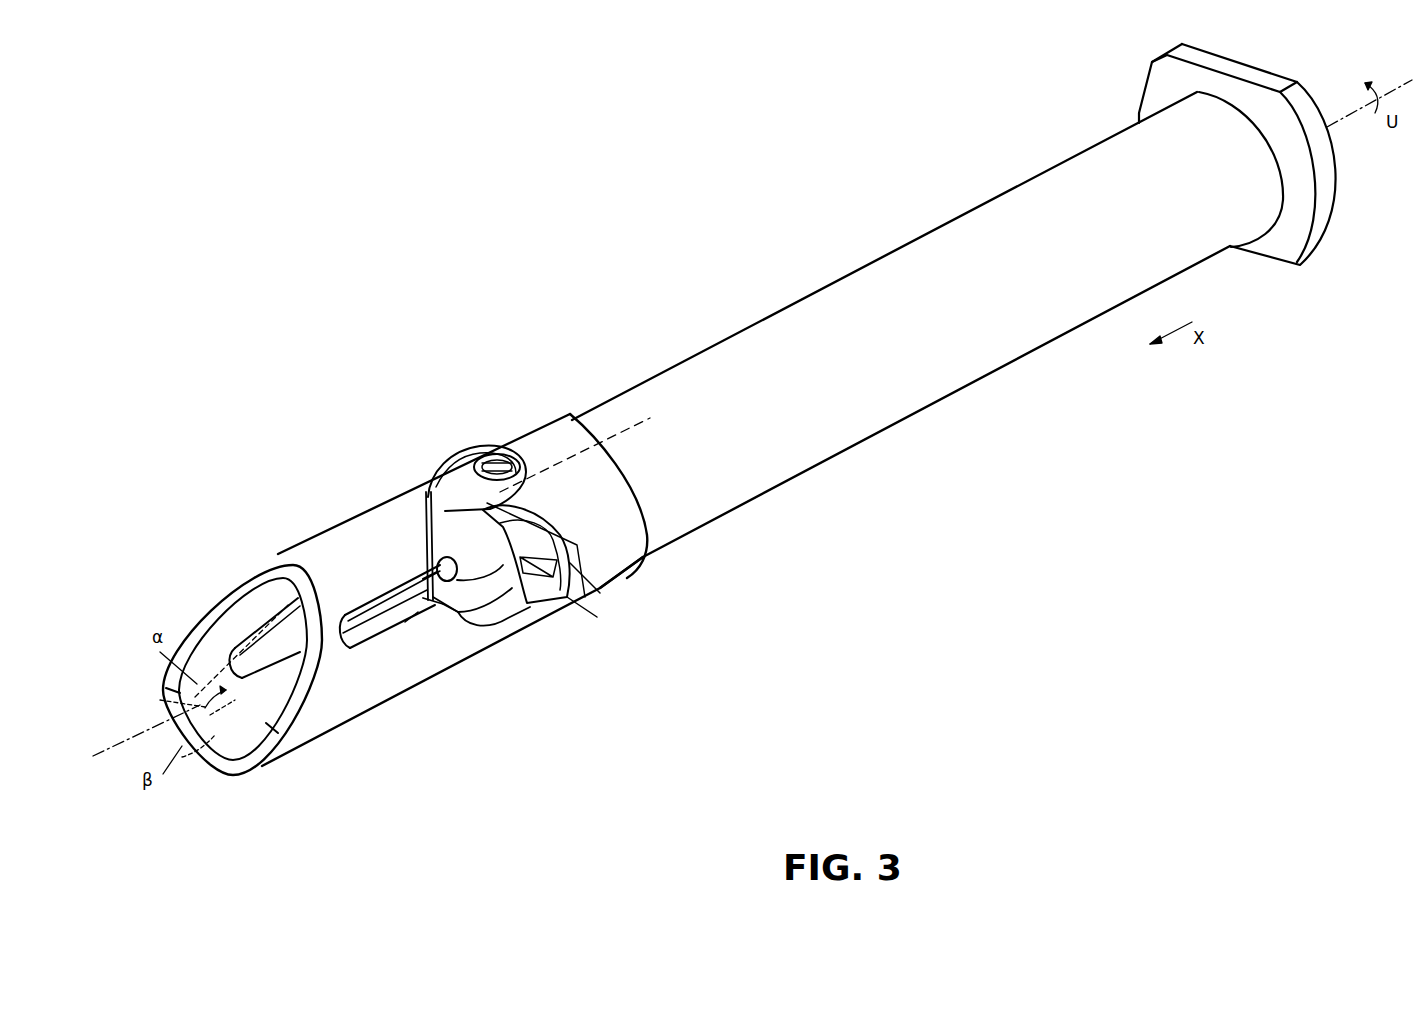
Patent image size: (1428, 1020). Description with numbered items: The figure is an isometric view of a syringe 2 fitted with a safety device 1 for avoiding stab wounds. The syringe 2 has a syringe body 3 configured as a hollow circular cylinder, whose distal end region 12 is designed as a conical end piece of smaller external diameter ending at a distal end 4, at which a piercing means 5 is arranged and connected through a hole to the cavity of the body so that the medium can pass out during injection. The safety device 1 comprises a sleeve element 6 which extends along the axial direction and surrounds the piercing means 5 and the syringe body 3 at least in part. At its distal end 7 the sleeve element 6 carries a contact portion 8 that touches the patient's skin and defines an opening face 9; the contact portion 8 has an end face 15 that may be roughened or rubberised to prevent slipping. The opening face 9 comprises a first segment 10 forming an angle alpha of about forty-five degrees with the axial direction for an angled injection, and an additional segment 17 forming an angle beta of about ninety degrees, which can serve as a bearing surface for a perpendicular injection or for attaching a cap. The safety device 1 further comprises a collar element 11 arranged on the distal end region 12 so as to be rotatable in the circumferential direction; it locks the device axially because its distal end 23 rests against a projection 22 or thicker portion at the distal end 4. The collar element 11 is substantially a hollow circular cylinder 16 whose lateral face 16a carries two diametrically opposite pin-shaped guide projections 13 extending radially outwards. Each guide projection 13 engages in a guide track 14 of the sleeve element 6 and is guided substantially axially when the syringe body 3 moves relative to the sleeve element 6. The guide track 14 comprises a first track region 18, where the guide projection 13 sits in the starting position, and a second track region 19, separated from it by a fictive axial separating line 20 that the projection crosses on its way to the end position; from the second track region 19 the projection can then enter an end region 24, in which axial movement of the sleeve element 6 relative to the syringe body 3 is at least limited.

The safety device 1 is at (262, 468).
The syringe 2 is at (803, 445).
The syringe body 3 is at (1075, 279).
The distal end 4 is at (420, 535).
The piercing means 5 is at (440, 655).
The sleeve element 6 is at (473, 633).
The distal end of the sleeve element 7 is at (212, 790).
The contact portion 8 is at (308, 704).
The opening face 9 is at (268, 690).
The segment 10 is at (258, 600).
The collar element 11 is at (470, 463).
The distal end region 12 is at (430, 462).
The guide projections 13 is at (497, 452).
The guide track 14 is at (490, 587).
The end face 15 is at (317, 673).
The hollow circular cylinder 16 is at (583, 600).
The lateral face 16a is at (584, 572).
The additional segment 17 is at (240, 745).
The first track region 18 is at (413, 483).
The second track region 19 is at (405, 662).
The separating line 20 is at (625, 425).
The projection 22 is at (543, 613).
The distal end of the collar element 23 is at (627, 573).
The end region 24 is at (563, 630).